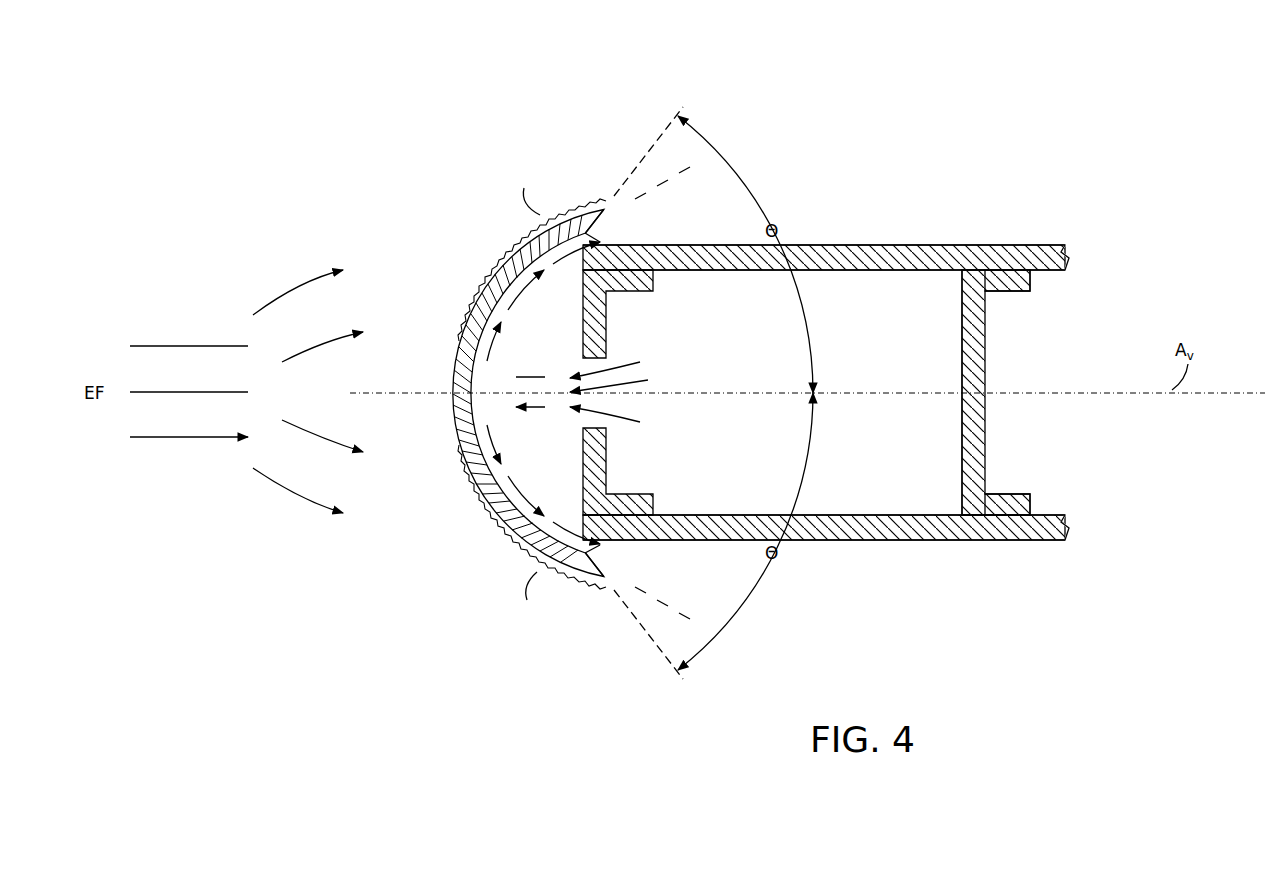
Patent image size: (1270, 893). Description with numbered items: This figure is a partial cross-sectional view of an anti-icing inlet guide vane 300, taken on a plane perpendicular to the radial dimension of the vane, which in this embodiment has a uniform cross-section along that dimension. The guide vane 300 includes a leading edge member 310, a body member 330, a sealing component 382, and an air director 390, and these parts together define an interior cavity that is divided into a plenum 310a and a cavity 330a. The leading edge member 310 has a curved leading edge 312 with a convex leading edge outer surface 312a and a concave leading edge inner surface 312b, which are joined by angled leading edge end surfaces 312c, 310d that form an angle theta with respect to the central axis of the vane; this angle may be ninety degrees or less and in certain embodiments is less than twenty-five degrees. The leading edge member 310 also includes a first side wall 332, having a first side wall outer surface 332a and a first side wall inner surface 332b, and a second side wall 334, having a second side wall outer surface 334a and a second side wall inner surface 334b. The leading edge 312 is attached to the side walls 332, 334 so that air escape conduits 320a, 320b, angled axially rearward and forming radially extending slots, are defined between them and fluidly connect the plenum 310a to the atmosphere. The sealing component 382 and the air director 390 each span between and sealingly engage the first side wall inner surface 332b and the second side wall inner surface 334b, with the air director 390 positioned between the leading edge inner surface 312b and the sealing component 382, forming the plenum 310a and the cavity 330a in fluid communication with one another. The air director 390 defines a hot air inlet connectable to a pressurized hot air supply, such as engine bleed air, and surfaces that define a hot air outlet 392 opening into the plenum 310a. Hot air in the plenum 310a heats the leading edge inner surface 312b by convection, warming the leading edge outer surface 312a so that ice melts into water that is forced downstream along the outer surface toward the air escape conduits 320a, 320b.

The inlet guide vane 300 is at (1193, 207).
The leading edge member 310 is at (548, 122).
The plenum 310a is at (532, 312).
The leading edge end surface 310d is at (618, 567).
The leading edge 312 is at (461, 328).
The leading edge outer surface 312a is at (458, 362).
The leading edge inner surface 312b is at (492, 315).
The leading edge end surface 312c is at (625, 216).
The air escape conduit 320a is at (600, 242).
The air escape conduit 320b is at (600, 545).
The body member 330 is at (884, 185).
The cavity 330a is at (750, 418).
The first side wall 332 is at (1063, 262).
The first side wall outer surface 332a is at (933, 245).
The first side wall inner surface 332b is at (877, 272).
The second side wall 334 is at (1063, 528).
The second side wall outer surface 334a is at (930, 520).
The second side wall inner surface 334b is at (876, 512).
The sealing component 382 is at (988, 426).
The air director 390 is at (652, 287).
The hot air outlet 392 is at (640, 384).